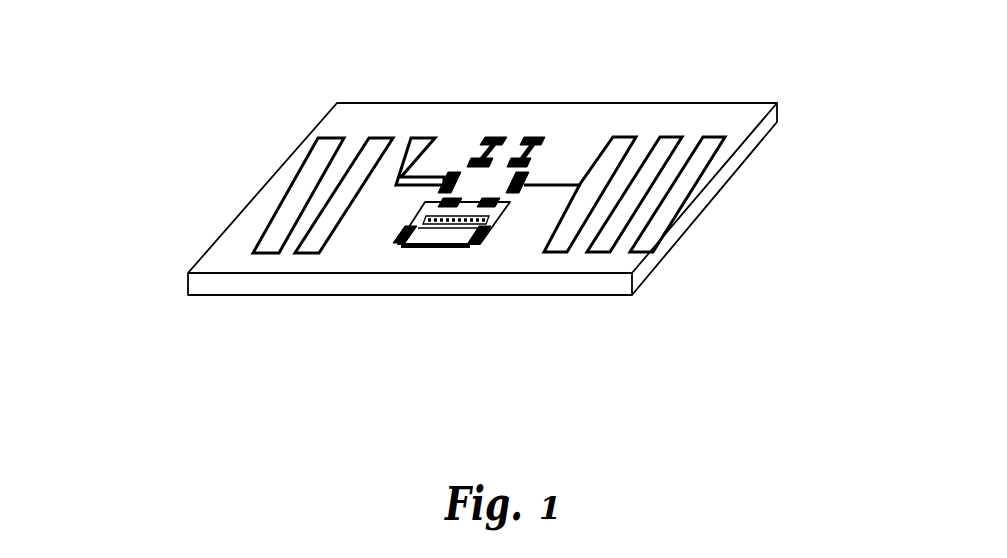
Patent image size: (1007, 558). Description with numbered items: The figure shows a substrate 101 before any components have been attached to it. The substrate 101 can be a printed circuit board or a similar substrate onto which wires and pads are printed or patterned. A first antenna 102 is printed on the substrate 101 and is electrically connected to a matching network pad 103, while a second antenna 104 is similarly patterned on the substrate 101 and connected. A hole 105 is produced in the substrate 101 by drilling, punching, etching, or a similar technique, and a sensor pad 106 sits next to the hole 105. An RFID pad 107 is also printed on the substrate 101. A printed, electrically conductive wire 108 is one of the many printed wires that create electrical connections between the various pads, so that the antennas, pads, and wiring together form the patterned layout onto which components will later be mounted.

The substrate 101 is at (617, 120).
The first antenna 102 is at (670, 187).
The matching network pad 103 is at (518, 192).
The second antenna 104 is at (258, 216).
The hole 105 is at (462, 235).
The sensor pad 106 is at (400, 237).
The RFID pad 107 is at (532, 138).
The printed electrically conductive wire 108 is at (479, 154).